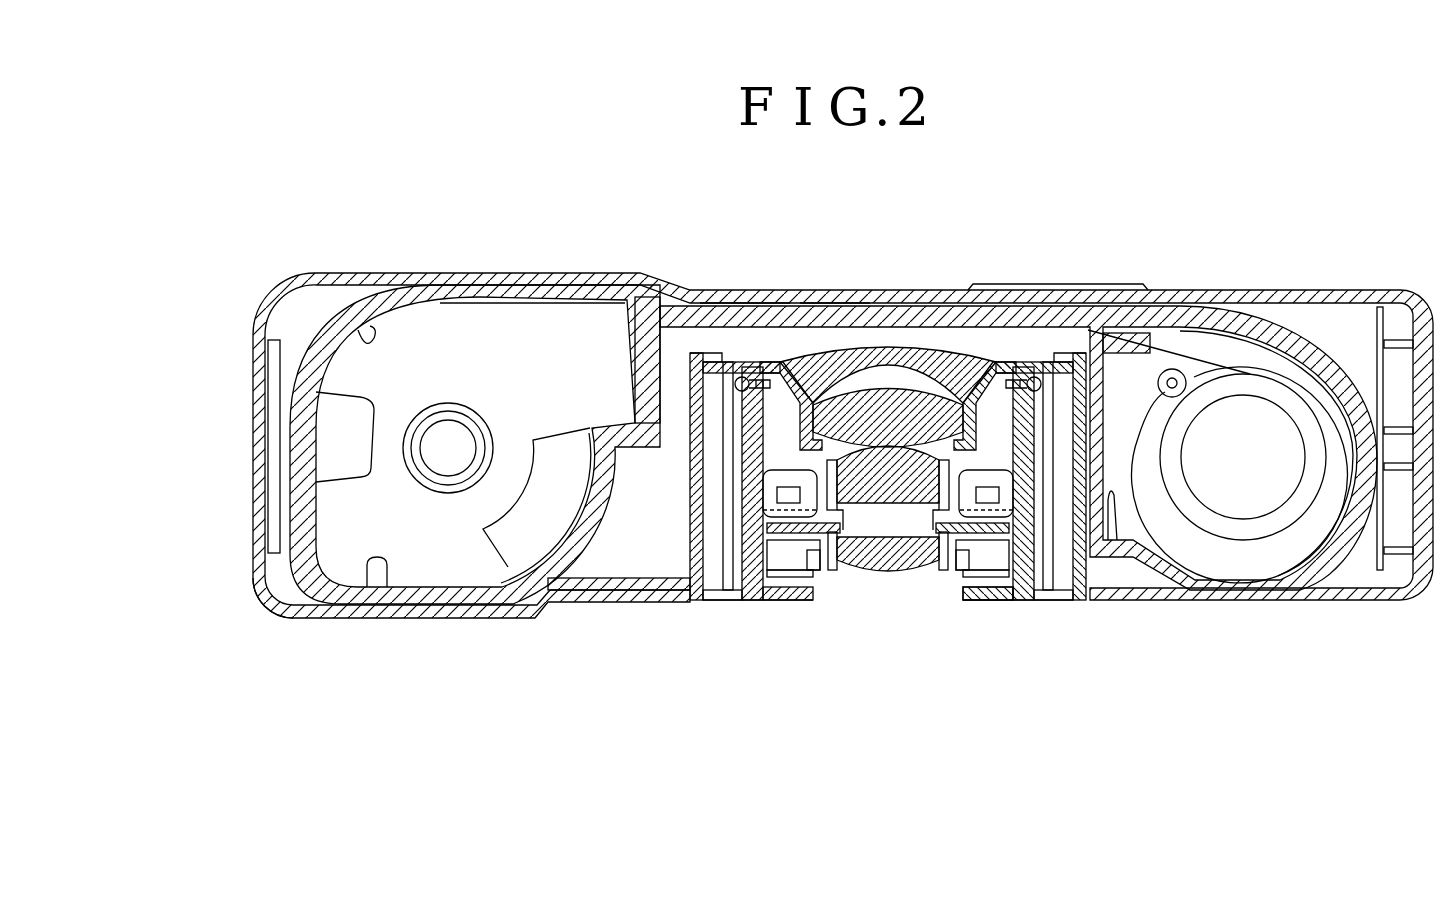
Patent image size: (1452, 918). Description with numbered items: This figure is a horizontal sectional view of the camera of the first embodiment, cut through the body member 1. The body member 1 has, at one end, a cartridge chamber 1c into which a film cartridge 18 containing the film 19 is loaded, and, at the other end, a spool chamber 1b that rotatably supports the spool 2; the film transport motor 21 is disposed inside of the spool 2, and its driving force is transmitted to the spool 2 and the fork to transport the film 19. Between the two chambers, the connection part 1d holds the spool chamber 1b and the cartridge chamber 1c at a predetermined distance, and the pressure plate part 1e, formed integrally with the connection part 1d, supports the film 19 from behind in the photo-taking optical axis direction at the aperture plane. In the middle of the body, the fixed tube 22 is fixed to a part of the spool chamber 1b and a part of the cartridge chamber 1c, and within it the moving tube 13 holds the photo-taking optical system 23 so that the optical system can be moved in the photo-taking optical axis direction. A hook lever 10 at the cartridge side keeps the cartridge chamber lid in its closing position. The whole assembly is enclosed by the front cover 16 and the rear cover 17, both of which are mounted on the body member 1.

The body member 1 is at (1018, 298).
The spool chamber 1b is at (1290, 350).
The cartridge chamber 1c is at (370, 330).
The connection part 1d is at (750, 298).
The pressure plate part 1e is at (825, 298).
The spool 2 is at (1268, 525).
The hook lever 10 is at (273, 517).
The moving tube 13 is at (888, 524).
The front cover 16 is at (278, 613).
The rear cover 17 is at (427, 280).
The film cartridge 18 is at (420, 560).
The film 19 is at (624, 302).
The film transport motor 21 is at (1240, 500).
The fixed tube 22 is at (1070, 585).
The photo-taking optical system 23 is at (888, 485).